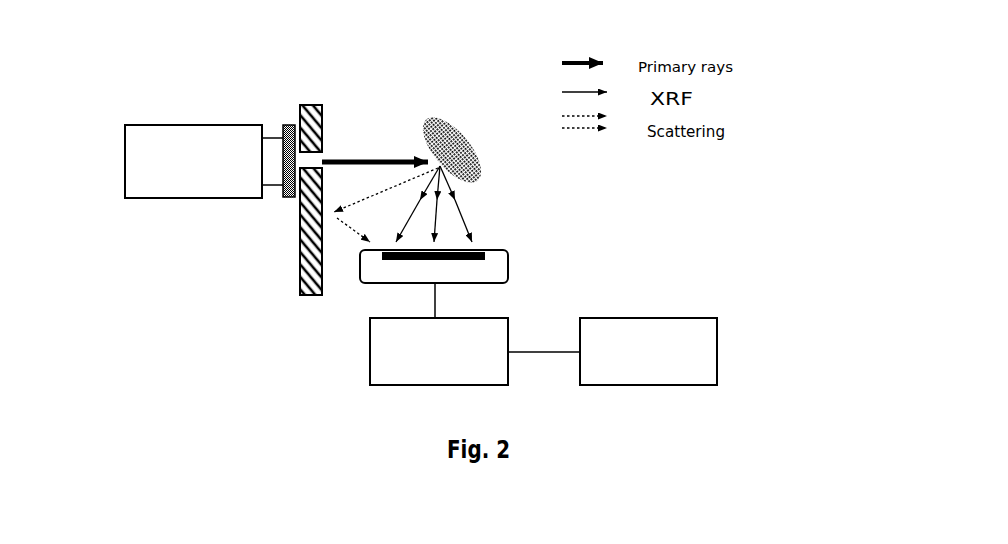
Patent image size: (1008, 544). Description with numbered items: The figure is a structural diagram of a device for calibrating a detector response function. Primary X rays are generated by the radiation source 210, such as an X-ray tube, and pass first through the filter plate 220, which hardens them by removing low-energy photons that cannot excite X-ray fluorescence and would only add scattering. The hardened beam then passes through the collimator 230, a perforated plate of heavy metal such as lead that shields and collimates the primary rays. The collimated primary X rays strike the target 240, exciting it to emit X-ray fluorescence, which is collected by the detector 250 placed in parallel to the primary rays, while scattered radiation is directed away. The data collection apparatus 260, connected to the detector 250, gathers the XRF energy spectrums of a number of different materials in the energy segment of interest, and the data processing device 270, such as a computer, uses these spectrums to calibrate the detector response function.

The radiation source 210 is at (170, 125).
The filter plate 220 is at (290, 125).
The collimator 230 is at (316, 105).
The target 240 is at (487, 177).
The detector 250 is at (500, 265).
The data collection apparatus 260 is at (370, 352).
The data processing device 270 is at (717, 350).